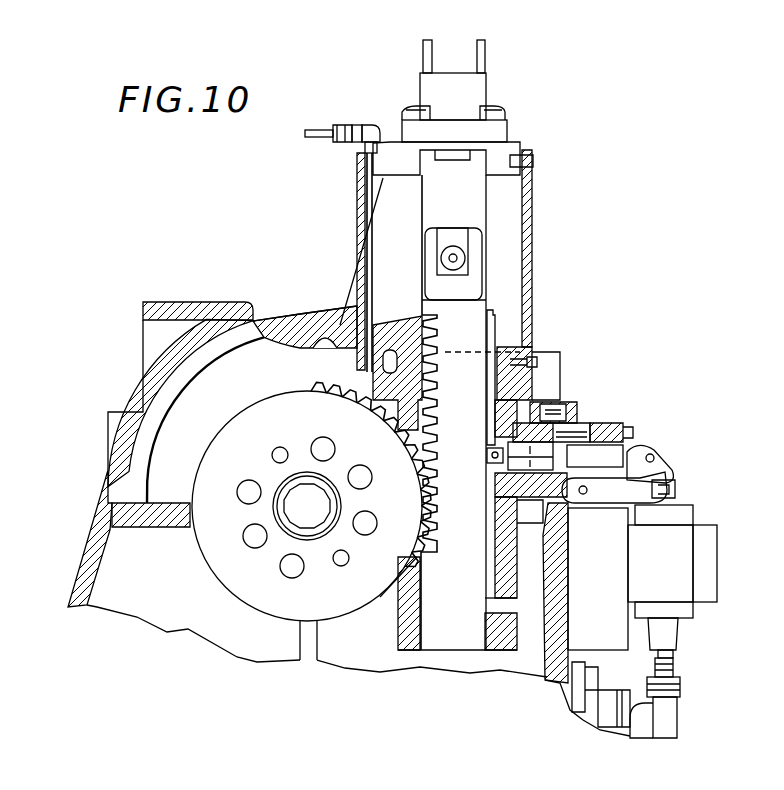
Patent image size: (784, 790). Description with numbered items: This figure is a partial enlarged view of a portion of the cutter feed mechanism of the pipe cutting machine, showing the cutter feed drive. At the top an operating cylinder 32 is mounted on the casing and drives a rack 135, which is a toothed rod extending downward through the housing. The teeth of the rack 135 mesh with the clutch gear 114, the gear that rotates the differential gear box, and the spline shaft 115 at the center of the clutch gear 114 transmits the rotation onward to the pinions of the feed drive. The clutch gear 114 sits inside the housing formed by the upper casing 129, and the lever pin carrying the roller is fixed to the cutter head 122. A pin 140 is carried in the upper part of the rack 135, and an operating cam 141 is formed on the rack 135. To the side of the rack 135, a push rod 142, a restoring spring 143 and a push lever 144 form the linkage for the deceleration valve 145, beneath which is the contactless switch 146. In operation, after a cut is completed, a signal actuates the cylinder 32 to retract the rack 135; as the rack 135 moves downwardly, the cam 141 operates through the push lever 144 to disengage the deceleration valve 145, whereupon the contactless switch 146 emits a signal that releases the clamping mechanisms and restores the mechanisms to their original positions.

The operating cylinder 32 is at (465, 104).
The clutch gear 114 is at (410, 495).
The spline shaft 115 is at (320, 516).
The cutter head 122 is at (100, 558).
The upper casing 129 is at (292, 316).
The rack 135 is at (478, 494).
The pin 140 is at (466, 251).
The operating cam 141 is at (488, 343).
The push rod 142 is at (640, 446).
The restoring spring 143 is at (580, 424).
The push lever 144 is at (660, 470).
The deceleration valve 145 is at (705, 562).
The contactless switch 146 is at (675, 722).